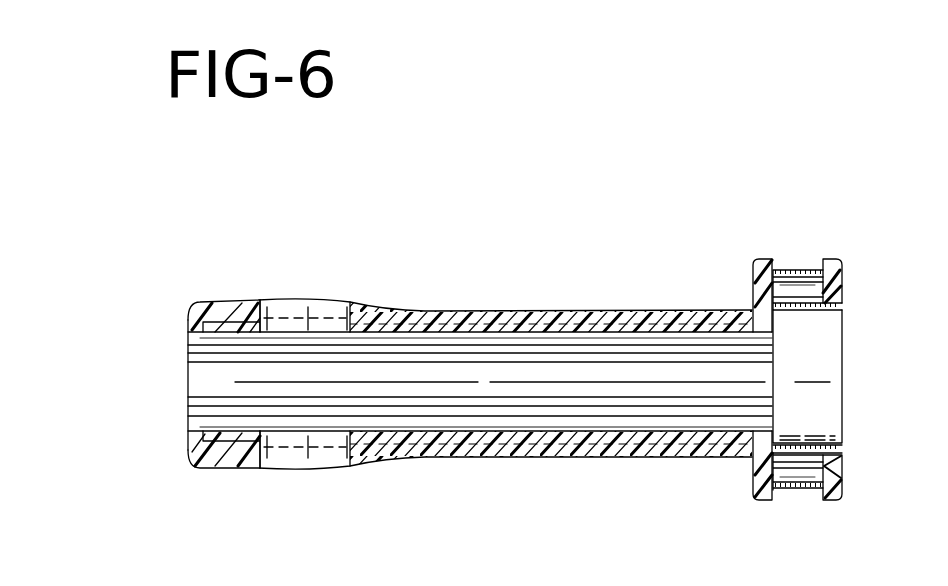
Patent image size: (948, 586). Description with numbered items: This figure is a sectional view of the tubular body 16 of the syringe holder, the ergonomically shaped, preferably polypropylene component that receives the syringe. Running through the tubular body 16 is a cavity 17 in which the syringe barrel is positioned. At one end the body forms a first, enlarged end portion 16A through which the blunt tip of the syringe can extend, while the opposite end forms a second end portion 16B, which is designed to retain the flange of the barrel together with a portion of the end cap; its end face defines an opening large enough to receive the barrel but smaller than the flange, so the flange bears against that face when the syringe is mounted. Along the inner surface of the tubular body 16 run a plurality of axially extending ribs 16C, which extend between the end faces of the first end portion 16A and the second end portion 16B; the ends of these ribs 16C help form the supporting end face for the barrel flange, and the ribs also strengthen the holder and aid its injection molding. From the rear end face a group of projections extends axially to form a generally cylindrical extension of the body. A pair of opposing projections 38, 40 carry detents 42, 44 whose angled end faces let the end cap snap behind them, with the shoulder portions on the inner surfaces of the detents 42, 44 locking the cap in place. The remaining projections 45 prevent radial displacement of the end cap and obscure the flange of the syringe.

The tubular body 16 is at (538, 302).
The first enlarged end portion 16A is at (211, 468).
The second end portion 16B is at (697, 308).
The axially extending ribs 16C is at (198, 407).
The cavity 17 is at (553, 425).
The projection 38 is at (795, 273).
The projection 40 is at (798, 485).
The detent 42 is at (838, 295).
The detent 44 is at (842, 462).
The remaining projections 45 is at (828, 378).